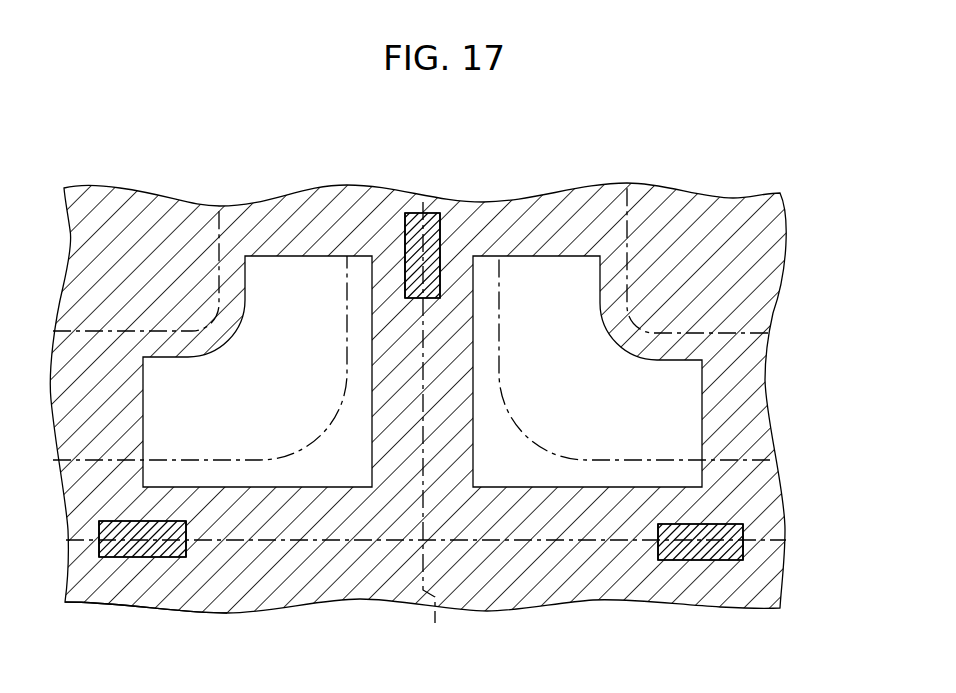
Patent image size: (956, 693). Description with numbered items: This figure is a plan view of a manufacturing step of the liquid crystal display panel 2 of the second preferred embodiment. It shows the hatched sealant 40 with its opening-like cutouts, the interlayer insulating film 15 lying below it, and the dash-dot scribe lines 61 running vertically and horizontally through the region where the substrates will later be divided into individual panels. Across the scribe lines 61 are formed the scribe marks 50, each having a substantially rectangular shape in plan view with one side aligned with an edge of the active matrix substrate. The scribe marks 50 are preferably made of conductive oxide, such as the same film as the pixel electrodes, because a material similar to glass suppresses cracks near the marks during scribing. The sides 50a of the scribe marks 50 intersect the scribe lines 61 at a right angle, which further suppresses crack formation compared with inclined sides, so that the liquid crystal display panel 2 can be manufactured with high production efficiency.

The liquid crystal display panel 2 is at (712, 155).
The interlayer insulating film 15 is at (308, 598).
The sealant 40 is at (752, 378).
The scribe mark 50 is at (443, 232).
The side of scribe mark 50a is at (434, 213).
The scribe line 61 is at (758, 530).